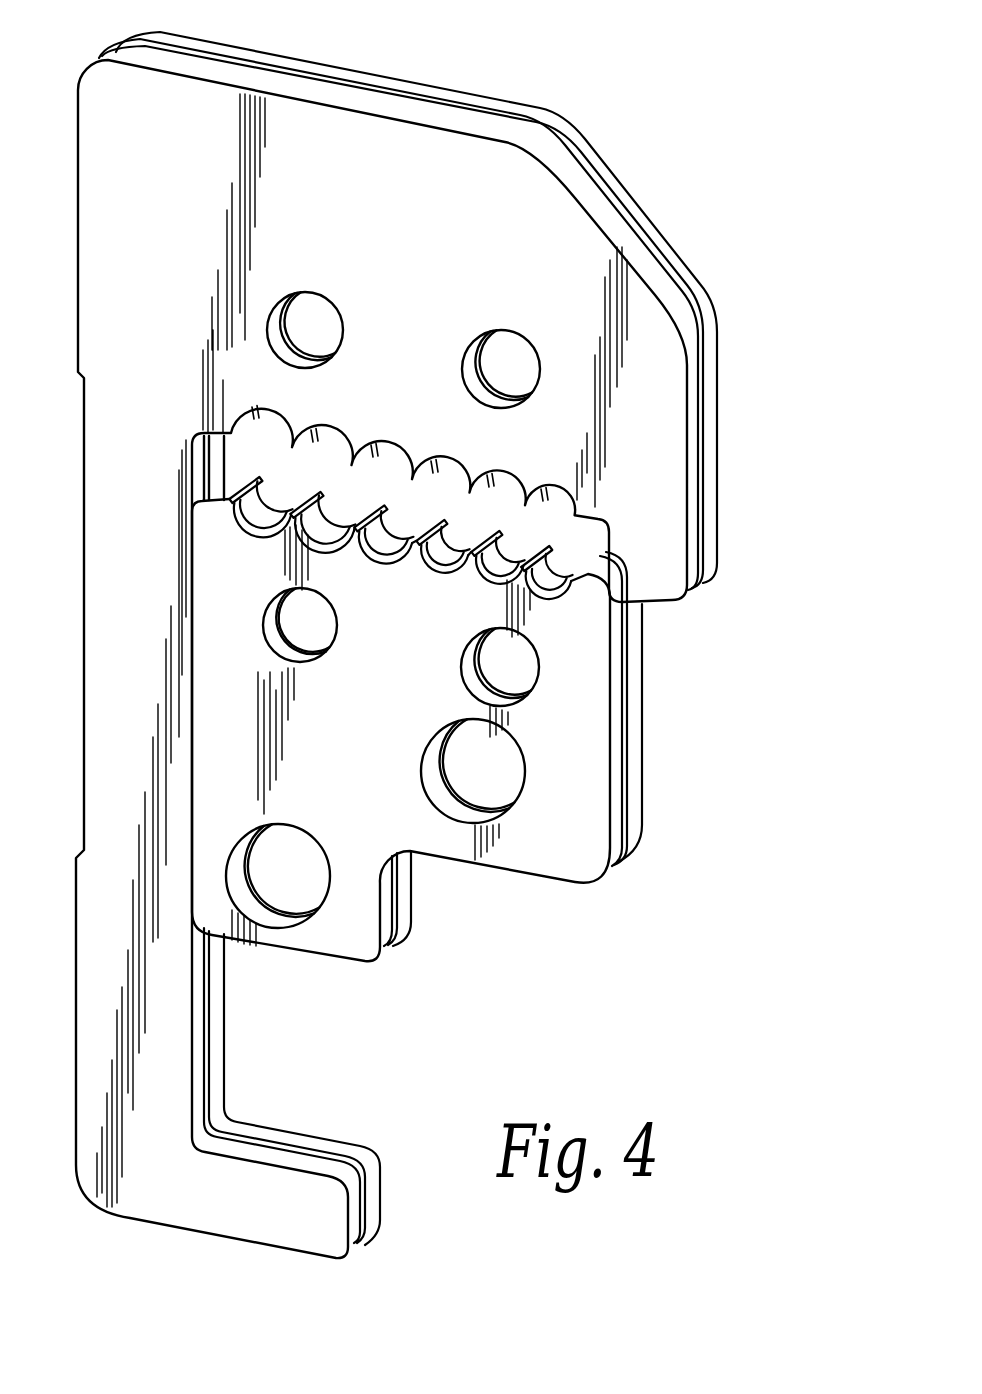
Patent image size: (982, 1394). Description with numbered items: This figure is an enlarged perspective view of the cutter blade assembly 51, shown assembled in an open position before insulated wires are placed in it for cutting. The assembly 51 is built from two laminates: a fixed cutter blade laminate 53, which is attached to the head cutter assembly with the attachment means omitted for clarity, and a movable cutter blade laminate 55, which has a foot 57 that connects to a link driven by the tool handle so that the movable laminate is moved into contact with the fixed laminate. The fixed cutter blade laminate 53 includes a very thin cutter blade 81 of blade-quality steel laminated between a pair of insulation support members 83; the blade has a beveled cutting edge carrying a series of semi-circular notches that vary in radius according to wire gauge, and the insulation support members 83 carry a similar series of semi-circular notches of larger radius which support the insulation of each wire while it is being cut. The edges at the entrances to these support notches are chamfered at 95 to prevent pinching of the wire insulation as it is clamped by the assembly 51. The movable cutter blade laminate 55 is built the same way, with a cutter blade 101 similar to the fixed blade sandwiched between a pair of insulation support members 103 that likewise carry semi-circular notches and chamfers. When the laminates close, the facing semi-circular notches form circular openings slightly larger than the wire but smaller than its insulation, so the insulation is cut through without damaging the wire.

The cutter blade assembly 51 is at (593, 127).
The movable cutter blade laminate 55 is at (673, 217).
The cutter blade 101 is at (703, 378).
The insulation support members 103 is at (693, 480).
The chamfers 95 is at (262, 483).
The fixed cutter blade laminate 53 is at (671, 766).
The insulation support members 83 is at (630, 660).
The cutter blade 81 is at (625, 722).
The foot 57 is at (287, 1192).